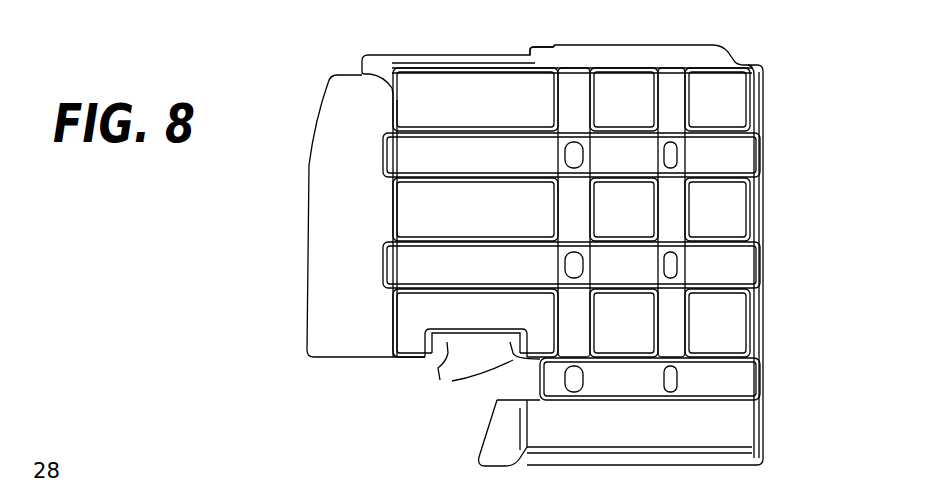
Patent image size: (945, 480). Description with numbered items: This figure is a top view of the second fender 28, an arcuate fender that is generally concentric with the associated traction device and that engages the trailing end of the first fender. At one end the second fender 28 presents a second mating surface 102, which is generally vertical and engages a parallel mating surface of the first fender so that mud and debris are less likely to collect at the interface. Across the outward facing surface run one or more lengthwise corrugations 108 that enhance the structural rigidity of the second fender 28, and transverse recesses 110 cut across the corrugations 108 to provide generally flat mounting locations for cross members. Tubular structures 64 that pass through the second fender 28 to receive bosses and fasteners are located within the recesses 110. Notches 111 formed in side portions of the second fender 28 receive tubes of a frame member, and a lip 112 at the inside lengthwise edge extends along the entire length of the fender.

The second fender 28 is at (869, 239).
The tubular structures 64 is at (667, 157).
The second mating surface 102 is at (327, 292).
The lengthwise corrugations 108 is at (740, 111).
The transverse recesses 110 is at (676, 80).
The notches 111 is at (540, 378).
The lip 112 is at (578, 37).